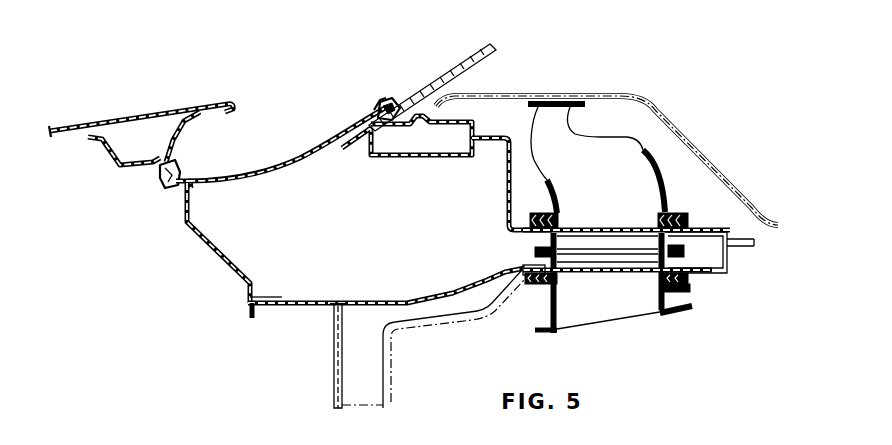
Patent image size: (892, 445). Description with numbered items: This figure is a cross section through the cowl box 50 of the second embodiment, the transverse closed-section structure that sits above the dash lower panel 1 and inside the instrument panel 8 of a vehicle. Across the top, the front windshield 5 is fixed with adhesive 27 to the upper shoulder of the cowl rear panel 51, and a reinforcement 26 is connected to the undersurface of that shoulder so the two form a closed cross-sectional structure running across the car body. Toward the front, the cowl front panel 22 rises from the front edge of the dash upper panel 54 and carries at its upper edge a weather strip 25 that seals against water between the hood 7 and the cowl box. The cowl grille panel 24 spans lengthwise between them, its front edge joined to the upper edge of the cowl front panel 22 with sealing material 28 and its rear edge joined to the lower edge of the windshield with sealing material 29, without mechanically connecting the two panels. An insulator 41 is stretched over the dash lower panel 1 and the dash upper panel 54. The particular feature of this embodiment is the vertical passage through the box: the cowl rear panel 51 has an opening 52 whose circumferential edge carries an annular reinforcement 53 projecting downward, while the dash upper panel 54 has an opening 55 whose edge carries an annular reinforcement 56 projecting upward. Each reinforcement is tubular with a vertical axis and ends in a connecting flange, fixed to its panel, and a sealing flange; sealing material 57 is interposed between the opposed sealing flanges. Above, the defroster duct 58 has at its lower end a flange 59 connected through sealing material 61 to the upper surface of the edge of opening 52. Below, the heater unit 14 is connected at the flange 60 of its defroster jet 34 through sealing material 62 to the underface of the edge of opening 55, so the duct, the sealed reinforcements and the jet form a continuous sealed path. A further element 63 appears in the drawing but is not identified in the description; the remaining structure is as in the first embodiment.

The dash lower panel 1 is at (332, 365).
The front windshield 5 is at (468, 62).
The hood 7 is at (133, 117).
The instrument panel 8 is at (640, 103).
The heater unit 14 is at (542, 318).
The cowl front panel 22 is at (222, 262).
The cowl grille panel 24 is at (318, 140).
The weather strip 25 is at (158, 172).
The reinforcement 26 is at (417, 157).
The adhesive 27 is at (398, 115).
The sealing material 28 is at (178, 178).
The sealing material 29 is at (384, 100).
The defroster jet 34 is at (602, 312).
The insulator 41 is at (387, 367).
The cowl box 50 is at (283, 193).
The cowl rear panel 51 is at (507, 140).
The opening 52 is at (662, 180).
The annular reinforcement 53 is at (684, 244).
The dash upper panel 54 is at (388, 300).
The opening 55 is at (623, 268).
The annular reinforcement 56 is at (717, 274).
The sealing material 57 is at (567, 243).
The defroster duct 58 is at (547, 181).
The flange 59 is at (688, 216).
The flange 60 is at (690, 285).
The sealing material 61 is at (690, 222).
The sealing material 62 is at (562, 277).
The bore 63 is at (608, 243).